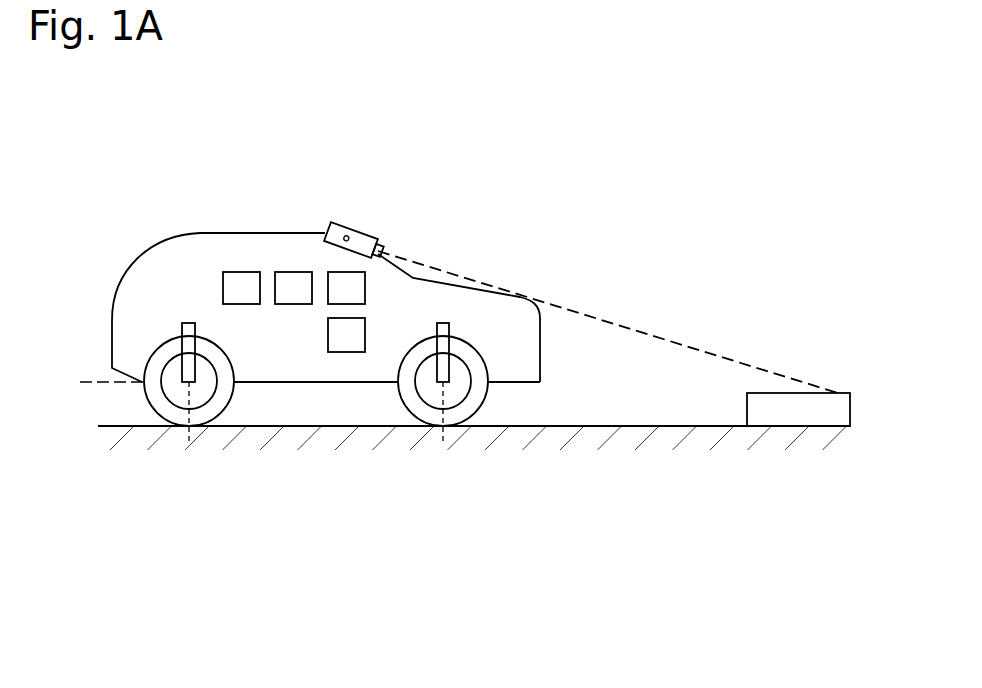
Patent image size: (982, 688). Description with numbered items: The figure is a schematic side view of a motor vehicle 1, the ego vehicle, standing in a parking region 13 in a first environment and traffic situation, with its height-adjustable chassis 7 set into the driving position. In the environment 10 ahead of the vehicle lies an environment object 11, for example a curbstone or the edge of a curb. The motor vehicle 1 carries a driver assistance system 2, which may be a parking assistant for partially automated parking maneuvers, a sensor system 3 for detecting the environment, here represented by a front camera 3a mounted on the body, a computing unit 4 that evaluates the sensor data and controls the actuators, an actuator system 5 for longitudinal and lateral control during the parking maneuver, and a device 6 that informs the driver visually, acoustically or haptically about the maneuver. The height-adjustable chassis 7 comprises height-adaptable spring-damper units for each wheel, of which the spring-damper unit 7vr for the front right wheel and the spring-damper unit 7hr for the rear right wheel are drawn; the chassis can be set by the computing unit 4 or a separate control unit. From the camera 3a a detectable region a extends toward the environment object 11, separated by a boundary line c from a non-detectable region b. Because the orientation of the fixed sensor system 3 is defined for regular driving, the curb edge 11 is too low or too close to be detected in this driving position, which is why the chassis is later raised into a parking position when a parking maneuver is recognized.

The motor vehicle 1 is at (186, 187).
The driver assistance system 2 is at (365, 287).
The sensor system 3 is at (394, 188).
The front camera 3a is at (356, 230).
The computing unit 4 is at (365, 329).
The actuator system 5 is at (292, 272).
The device 6 is at (240, 272).
The height-adjustable chassis 7 is at (188, 265).
The spring-damper unit for the rear right wheel 7hr is at (182, 324).
The spring-damper unit for the front right wheel 7vr is at (449, 326).
The environment 10 is at (778, 198).
The environment object 11 is at (795, 393).
The parking region 13 is at (544, 440).
The detectable region a is at (610, 293).
The non-detectable region b is at (611, 345).
The boundary line c is at (508, 277).